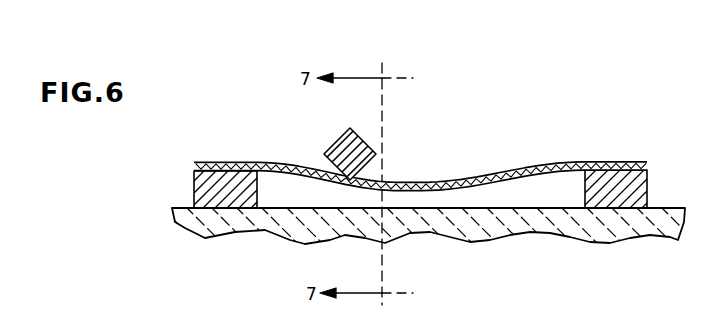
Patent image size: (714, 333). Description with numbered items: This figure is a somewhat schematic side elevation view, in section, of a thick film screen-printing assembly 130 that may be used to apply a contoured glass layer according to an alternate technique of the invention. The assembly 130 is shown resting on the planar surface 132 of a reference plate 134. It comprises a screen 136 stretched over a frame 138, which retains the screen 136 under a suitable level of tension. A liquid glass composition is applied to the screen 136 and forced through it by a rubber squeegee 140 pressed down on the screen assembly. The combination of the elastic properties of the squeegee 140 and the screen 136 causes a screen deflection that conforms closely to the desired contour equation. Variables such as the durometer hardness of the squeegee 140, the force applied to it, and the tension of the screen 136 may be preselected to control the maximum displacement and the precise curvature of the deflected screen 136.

The thick film screen-printing assembly 130 is at (589, 141).
The planar surface 132 is at (665, 208).
The reference plate 134 is at (417, 222).
The screen 136 is at (473, 183).
The frame 138 is at (194, 172).
The rubber squeegee 140 is at (338, 147).